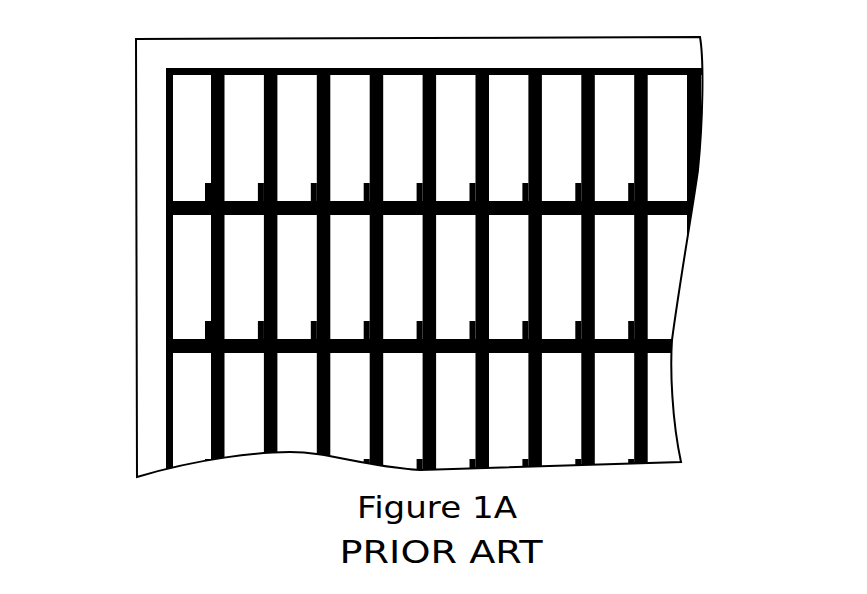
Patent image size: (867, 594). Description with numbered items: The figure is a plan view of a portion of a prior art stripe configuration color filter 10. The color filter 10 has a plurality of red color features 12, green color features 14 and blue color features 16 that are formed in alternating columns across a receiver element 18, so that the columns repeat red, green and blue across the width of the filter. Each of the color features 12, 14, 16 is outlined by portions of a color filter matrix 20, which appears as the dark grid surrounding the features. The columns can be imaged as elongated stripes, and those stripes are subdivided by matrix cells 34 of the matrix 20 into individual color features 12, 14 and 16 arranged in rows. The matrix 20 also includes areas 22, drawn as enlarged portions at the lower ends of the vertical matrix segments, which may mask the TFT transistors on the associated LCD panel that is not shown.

The color filter 10 is at (129, 369).
The red color feature 12 is at (185, 87).
The green color feature 14 is at (243, 87).
The blue color feature 16 is at (294, 87).
The receiver element 18 is at (580, 58).
The color filter matrix 20 is at (705, 90).
The area of matrix 22 is at (648, 185).
The matrix cell 34 is at (166, 367).